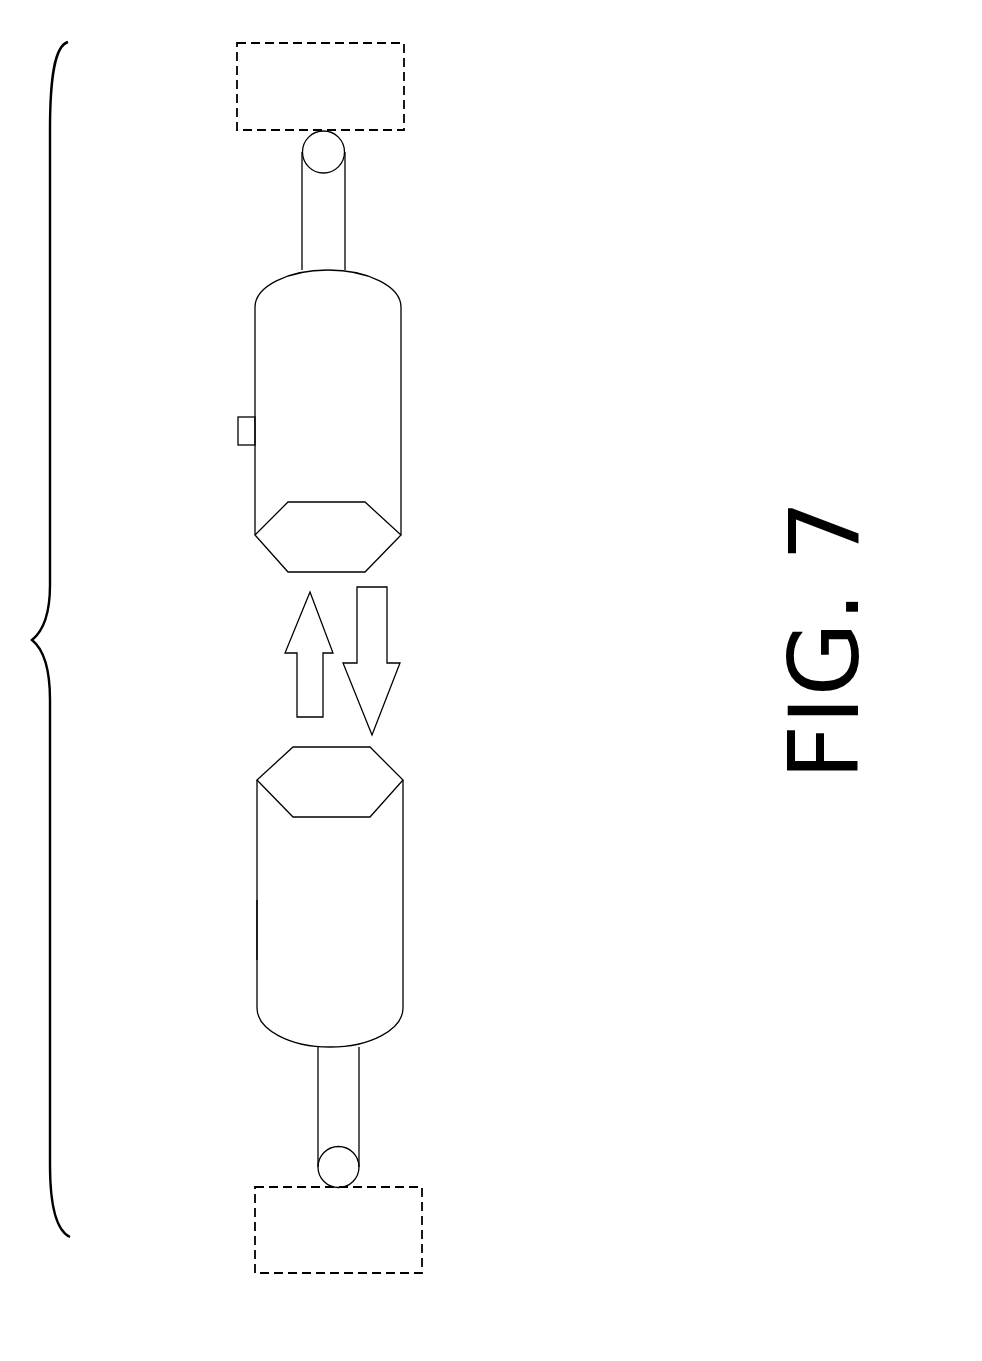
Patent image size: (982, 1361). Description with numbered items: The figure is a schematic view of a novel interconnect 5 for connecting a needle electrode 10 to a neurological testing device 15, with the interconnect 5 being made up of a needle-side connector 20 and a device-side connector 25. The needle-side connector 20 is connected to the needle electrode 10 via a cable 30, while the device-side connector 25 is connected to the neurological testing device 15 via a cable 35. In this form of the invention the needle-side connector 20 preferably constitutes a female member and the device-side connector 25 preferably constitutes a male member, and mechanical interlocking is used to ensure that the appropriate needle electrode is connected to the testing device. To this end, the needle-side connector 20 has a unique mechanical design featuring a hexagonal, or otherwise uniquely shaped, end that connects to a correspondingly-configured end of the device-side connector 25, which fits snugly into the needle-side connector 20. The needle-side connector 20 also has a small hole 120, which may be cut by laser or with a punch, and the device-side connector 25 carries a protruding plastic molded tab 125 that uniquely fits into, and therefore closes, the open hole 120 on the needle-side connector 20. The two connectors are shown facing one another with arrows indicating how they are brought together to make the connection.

The interconnect 5 is at (35, 639).
The needle electrode 10 is at (422, 1232).
The neurological testing device 15 is at (405, 78).
The needle-side connector 20 is at (406, 1004).
The device-side connector 25 is at (393, 283).
The cable 30 is at (362, 1104).
The cable 35 is at (348, 222).
The hole 120 is at (255, 932).
The tab 125 is at (235, 416).